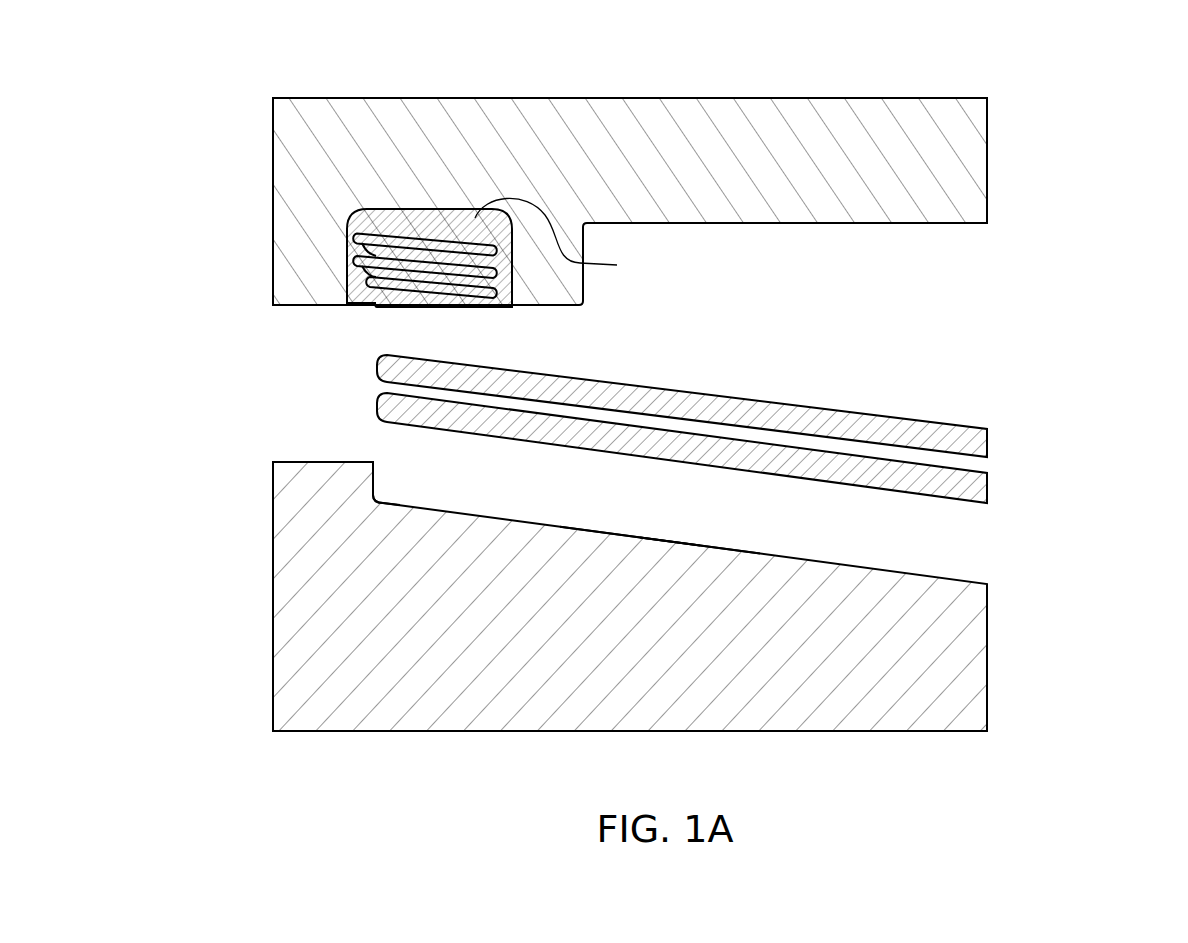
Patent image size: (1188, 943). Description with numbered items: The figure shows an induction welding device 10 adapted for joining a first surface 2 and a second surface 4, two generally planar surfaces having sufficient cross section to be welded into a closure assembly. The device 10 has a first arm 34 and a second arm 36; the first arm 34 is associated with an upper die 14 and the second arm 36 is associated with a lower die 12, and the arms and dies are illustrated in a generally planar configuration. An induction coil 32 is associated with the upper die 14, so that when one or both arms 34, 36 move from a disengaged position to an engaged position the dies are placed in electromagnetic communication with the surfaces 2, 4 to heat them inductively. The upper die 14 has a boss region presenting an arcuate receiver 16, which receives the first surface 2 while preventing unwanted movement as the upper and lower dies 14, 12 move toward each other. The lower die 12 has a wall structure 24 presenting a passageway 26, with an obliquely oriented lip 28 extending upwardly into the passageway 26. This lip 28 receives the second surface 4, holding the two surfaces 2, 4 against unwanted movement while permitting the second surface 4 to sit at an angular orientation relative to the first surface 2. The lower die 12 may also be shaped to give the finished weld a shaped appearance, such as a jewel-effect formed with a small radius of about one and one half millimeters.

The induction welding device 10 is at (1062, 147).
The lower die 12 is at (314, 633).
The upper die 14 is at (273, 181).
The arcuate receiver 16 is at (383, 303).
The first surface 2 is at (800, 433).
The second surface 4 is at (948, 468).
The wall structure 24 is at (622, 536).
The passageway 26 is at (653, 540).
The obliquely oriented lip 28 is at (384, 503).
The induction coil 32 is at (561, 239).
The first arm 34 is at (650, 98).
The second arm 36 is at (858, 731).